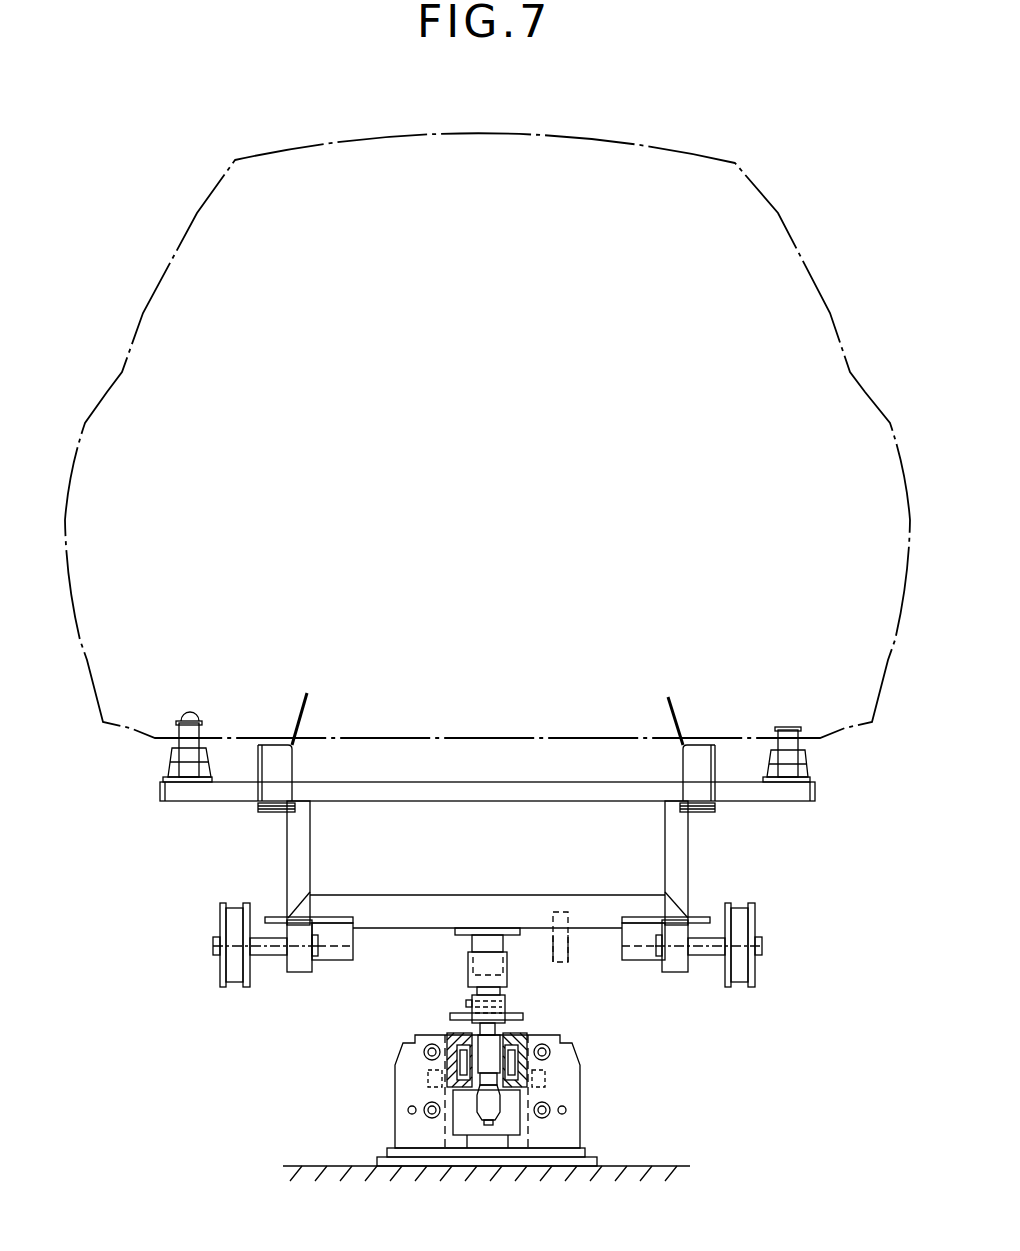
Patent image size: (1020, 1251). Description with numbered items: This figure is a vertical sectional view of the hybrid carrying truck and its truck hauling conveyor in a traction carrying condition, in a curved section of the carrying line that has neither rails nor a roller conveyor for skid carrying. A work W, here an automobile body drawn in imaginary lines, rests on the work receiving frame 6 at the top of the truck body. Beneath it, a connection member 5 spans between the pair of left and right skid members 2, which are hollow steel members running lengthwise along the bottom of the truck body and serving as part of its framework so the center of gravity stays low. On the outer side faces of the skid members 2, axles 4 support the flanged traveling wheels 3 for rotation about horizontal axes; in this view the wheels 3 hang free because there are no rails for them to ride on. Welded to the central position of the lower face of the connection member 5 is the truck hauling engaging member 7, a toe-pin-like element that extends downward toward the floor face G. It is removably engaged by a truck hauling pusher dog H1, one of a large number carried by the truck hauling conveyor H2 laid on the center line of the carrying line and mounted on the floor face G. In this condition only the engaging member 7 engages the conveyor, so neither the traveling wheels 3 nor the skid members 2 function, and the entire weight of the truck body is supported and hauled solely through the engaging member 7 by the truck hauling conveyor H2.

The work W is at (520, 135).
The work receiving frame 6 is at (802, 798).
The connection member 5 is at (470, 910).
The truck hauling engaging member 7 is at (483, 943).
The skid member 2 is at (301, 968).
The traveling wheel 3 is at (238, 968).
The axle 4 is at (272, 950).
The truck hauling pusher dog H1 is at (493, 1003).
The truck hauling conveyor H2 is at (606, 1080).
The floor face G is at (649, 1166).